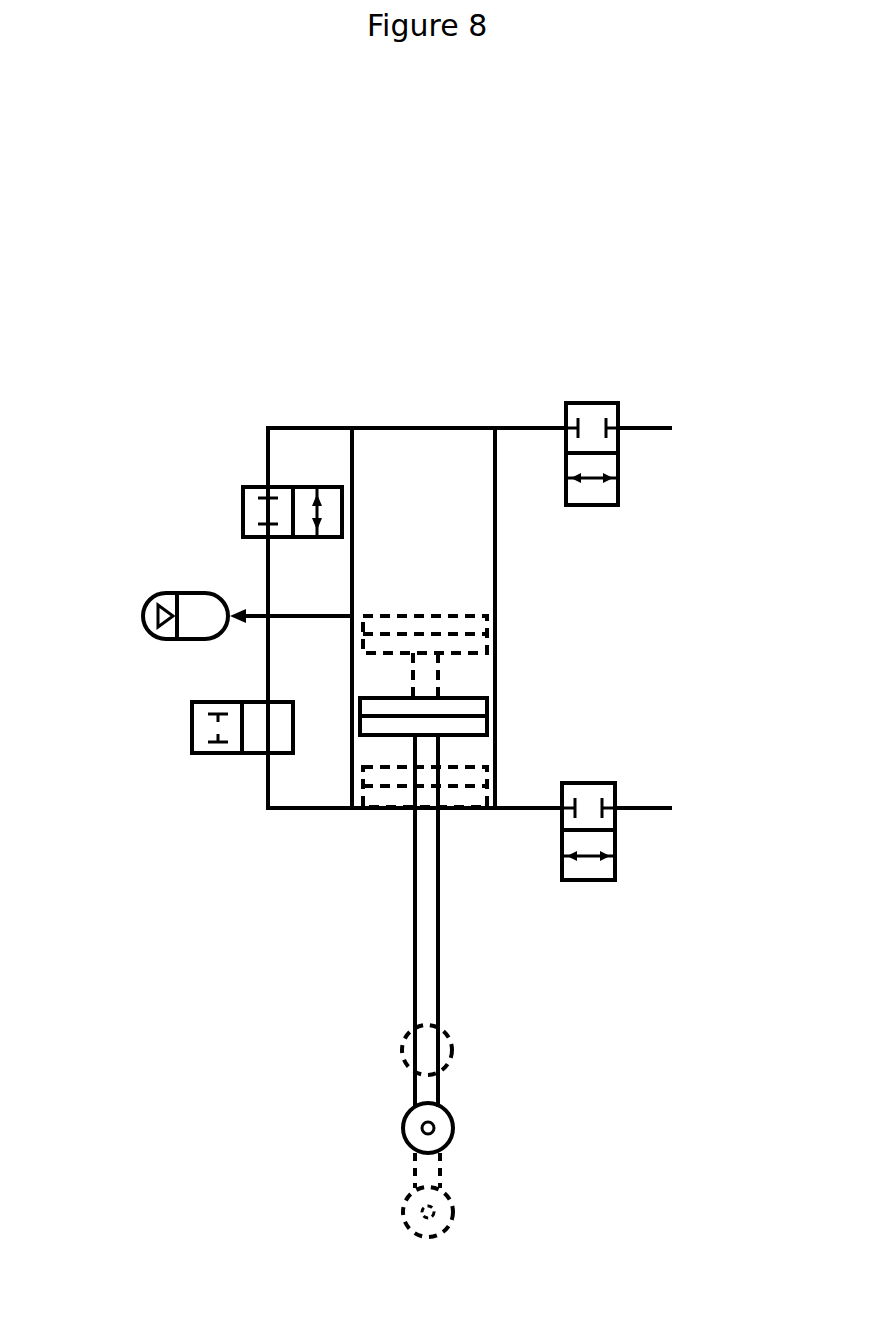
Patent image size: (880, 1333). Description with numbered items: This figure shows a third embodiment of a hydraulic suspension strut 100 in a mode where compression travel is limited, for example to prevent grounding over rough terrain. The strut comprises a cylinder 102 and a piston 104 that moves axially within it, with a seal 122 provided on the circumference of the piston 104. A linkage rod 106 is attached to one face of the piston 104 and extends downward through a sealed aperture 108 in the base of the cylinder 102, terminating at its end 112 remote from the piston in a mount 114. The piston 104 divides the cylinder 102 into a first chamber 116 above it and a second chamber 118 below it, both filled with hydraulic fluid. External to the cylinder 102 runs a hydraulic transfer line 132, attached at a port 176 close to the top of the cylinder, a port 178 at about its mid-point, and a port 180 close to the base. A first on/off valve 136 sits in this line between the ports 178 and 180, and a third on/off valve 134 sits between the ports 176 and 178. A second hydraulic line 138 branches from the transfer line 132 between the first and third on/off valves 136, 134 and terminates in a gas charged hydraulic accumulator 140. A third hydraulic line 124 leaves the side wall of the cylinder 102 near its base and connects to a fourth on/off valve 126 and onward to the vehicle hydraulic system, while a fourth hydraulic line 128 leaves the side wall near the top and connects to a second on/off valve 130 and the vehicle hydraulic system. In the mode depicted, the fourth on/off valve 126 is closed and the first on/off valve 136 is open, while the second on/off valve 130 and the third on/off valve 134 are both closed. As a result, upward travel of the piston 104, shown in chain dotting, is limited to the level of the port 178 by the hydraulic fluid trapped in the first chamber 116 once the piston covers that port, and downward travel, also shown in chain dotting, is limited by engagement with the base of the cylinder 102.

The hydraulic suspension strut 100 is at (288, 385).
The cylinder 102 is at (495, 527).
The piston 104 is at (467, 725).
The linkage rod 106 is at (410, 902).
The sealed aperture 108 is at (395, 808).
The end 112 is at (440, 1108).
The mount 114 is at (403, 1122).
The first chamber 116 is at (432, 596).
The second chamber 118 is at (380, 752).
The seal 122 is at (497, 711).
The third hydraulic line 124 is at (621, 887).
The fourth on/off valve 126 is at (615, 785).
The fourth hydraulic line 128 is at (518, 428).
The second on/off valve 130 is at (618, 405).
The hydraulic transfer line 132 is at (267, 445).
The third on/off valve 134 is at (243, 488).
The first on/off valve 136 is at (192, 722).
The second hydraulic line 138 is at (156, 573).
The gas charged hydraulic accumulator 140 is at (143, 614).
The port 176 is at (348, 427).
The port 178 is at (350, 616).
The port 180 is at (383, 808).